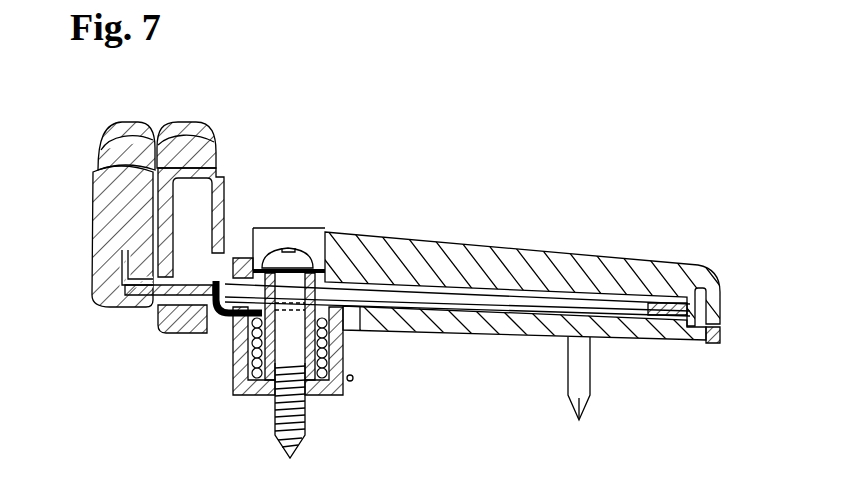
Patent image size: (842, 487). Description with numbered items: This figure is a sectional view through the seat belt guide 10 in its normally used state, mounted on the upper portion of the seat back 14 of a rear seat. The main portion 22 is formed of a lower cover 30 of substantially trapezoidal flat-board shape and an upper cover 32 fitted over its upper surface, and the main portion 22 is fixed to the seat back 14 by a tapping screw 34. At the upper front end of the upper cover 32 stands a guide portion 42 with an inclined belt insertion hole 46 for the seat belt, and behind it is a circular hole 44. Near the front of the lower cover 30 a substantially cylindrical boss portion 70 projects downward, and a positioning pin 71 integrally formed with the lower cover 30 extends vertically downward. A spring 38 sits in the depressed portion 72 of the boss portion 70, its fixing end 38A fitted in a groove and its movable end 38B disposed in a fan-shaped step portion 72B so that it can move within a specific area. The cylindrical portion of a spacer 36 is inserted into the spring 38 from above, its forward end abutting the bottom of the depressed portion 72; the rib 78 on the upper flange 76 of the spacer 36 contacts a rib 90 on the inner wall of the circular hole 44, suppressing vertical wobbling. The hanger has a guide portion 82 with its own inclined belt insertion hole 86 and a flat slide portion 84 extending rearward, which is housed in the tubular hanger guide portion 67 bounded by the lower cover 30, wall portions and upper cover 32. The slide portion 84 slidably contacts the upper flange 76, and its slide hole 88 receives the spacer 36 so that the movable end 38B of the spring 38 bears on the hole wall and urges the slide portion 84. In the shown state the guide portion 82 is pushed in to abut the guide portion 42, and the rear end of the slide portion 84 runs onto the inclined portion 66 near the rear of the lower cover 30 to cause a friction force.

The seat belt guide 10 is at (500, 135).
The seat back 14 is at (90, 197).
The main portion 22 is at (523, 284).
The lower cover 30 is at (696, 345).
The upper cover 32 is at (709, 277).
The tapping screw 34 is at (308, 251).
The spacer 36 is at (229, 266).
The spring 38 is at (333, 346).
The fixing end 38A is at (354, 378).
The movable end 38B is at (213, 326).
The guide portion 42 is at (181, 136).
The circular hole 44 is at (258, 240).
The belt insertion hole 46 is at (212, 166).
The inclined portion 66 is at (680, 337).
The hanger guide portion 67 is at (377, 284).
The boss portion 70 is at (233, 394).
The positioning pin 71 is at (584, 385).
The depressed portion 72 is at (235, 372).
The step portion 72B is at (158, 322).
The upper flange 76 is at (368, 277).
The rib 78 is at (335, 264).
The guide portion 82 is at (128, 128).
The slide portion 84 is at (620, 302).
The belt insertion hole 86 is at (95, 163).
The slide hole 88 is at (580, 302).
The rib 90 is at (263, 242).